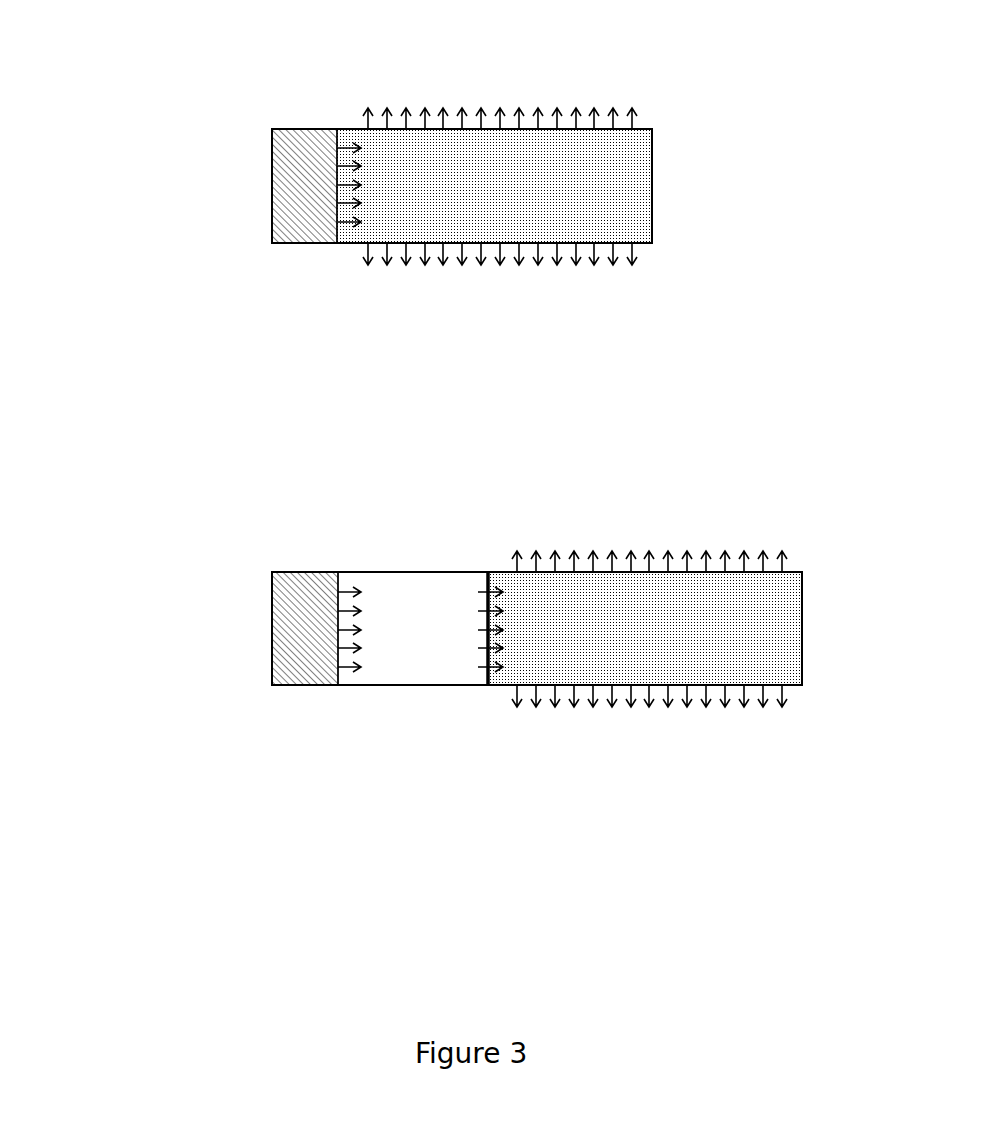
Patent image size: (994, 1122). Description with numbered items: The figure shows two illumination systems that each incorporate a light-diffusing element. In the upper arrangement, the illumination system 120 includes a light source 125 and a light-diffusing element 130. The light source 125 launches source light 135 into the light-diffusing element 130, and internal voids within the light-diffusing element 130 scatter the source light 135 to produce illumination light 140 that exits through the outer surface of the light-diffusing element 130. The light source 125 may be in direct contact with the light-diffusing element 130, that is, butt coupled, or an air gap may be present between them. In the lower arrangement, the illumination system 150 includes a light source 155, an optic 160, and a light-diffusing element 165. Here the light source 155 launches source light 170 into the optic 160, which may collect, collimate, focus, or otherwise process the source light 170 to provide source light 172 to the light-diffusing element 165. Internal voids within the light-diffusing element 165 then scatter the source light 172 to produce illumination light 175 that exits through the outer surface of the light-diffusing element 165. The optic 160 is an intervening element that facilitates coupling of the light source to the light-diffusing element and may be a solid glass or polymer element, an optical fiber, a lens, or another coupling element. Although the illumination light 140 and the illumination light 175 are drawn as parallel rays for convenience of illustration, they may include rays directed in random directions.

The illumination system 120 is at (160, 114).
The light source 125 is at (303, 200).
The light-diffusing element 130 is at (633, 177).
The source light 135 is at (352, 146).
The illumination light 140 is at (634, 110).
The illumination system 150 is at (188, 559).
The light source 155 is at (310, 597).
The optic 160 is at (423, 598).
The light-diffusing element 165 is at (775, 626).
The source light 170 is at (350, 590).
The source light 172 is at (497, 590).
The illumination light 175 is at (784, 554).